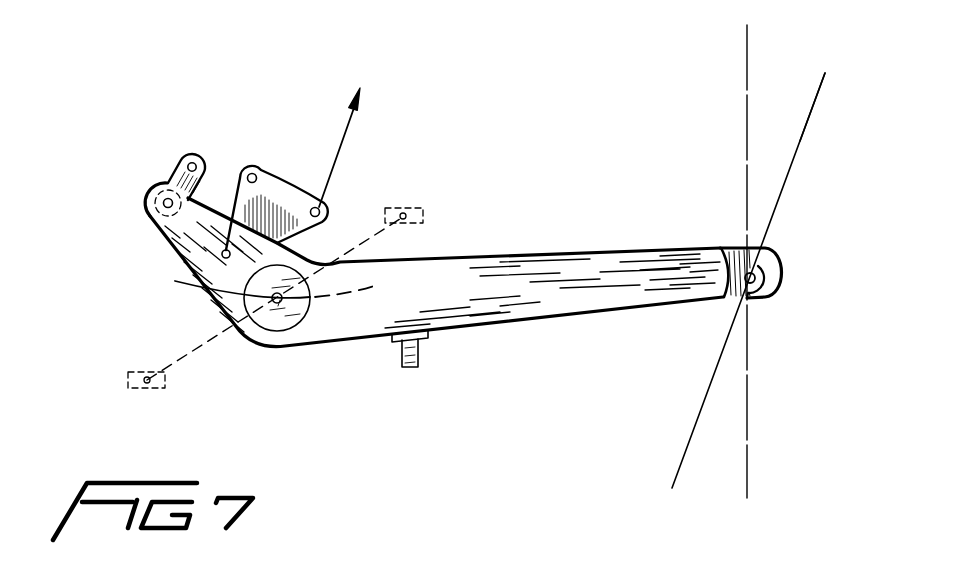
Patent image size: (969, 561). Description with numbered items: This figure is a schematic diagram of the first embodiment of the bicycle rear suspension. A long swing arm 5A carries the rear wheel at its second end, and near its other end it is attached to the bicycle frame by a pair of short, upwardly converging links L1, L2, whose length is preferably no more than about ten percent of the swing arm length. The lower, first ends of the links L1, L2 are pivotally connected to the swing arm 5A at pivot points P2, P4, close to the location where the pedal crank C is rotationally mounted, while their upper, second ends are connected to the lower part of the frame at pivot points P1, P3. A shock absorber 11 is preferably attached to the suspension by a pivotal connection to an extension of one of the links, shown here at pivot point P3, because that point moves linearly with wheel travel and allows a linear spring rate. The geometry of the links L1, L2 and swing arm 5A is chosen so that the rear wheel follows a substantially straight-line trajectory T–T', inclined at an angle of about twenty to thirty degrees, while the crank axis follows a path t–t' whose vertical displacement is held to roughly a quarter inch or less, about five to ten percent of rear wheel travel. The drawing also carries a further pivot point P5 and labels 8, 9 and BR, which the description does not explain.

The swing arm 5A is at (483, 290).
The end piece 8 is at (776, 260).
The pivot 9 is at (763, 284).
The shock absorber 11 is at (348, 136).
The bracket BR is at (421, 352).
The pedal crank C is at (279, 307).
The converging link L1 is at (247, 164).
The converging link L2 is at (183, 180).
The pivot point P1 is at (190, 162).
The pivot point P2 is at (163, 204).
The pivot point P3 is at (263, 175).
The pivot point P4 is at (222, 251).
The pivot P5 is at (326, 208).
The crank axis path endpoint t is at (234, 285).
The crank axis path endpoint t' is at (355, 284).
The wheel travel trajectory endpoint T is at (743, 295).
The wheel travel trajectory endpoint T' is at (818, 93).